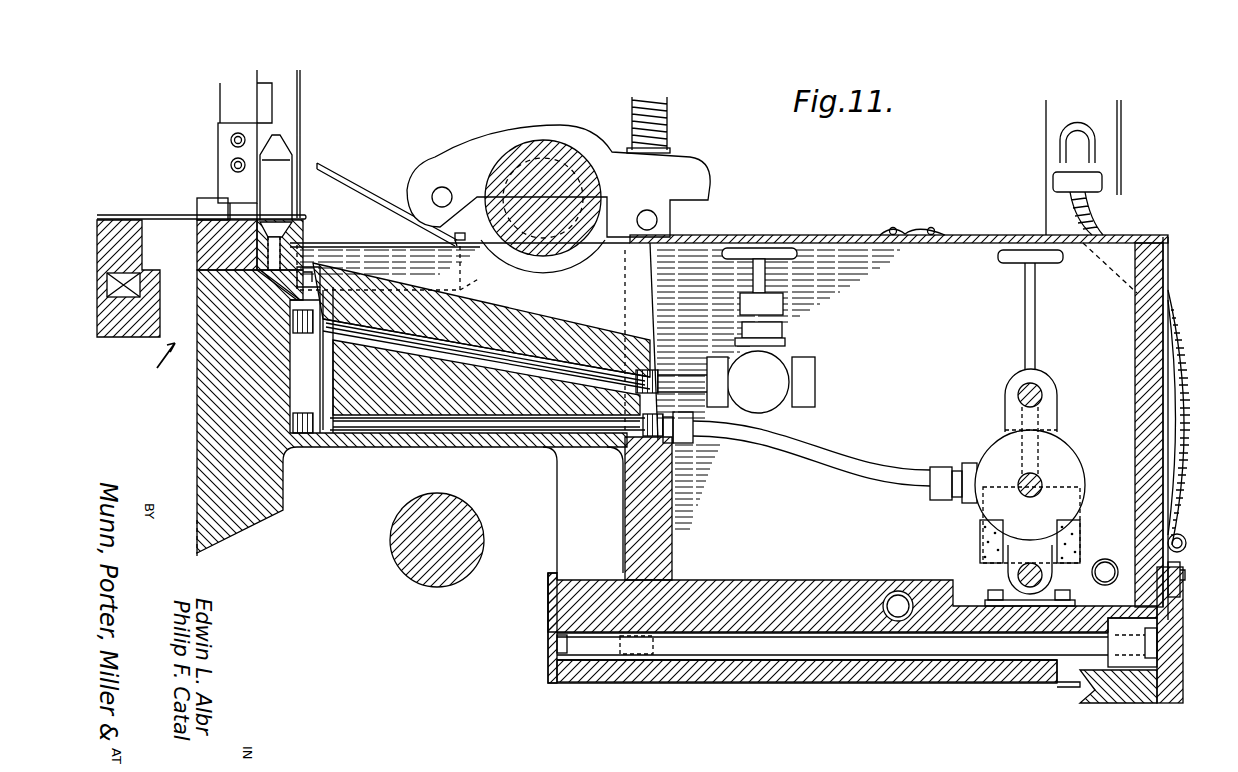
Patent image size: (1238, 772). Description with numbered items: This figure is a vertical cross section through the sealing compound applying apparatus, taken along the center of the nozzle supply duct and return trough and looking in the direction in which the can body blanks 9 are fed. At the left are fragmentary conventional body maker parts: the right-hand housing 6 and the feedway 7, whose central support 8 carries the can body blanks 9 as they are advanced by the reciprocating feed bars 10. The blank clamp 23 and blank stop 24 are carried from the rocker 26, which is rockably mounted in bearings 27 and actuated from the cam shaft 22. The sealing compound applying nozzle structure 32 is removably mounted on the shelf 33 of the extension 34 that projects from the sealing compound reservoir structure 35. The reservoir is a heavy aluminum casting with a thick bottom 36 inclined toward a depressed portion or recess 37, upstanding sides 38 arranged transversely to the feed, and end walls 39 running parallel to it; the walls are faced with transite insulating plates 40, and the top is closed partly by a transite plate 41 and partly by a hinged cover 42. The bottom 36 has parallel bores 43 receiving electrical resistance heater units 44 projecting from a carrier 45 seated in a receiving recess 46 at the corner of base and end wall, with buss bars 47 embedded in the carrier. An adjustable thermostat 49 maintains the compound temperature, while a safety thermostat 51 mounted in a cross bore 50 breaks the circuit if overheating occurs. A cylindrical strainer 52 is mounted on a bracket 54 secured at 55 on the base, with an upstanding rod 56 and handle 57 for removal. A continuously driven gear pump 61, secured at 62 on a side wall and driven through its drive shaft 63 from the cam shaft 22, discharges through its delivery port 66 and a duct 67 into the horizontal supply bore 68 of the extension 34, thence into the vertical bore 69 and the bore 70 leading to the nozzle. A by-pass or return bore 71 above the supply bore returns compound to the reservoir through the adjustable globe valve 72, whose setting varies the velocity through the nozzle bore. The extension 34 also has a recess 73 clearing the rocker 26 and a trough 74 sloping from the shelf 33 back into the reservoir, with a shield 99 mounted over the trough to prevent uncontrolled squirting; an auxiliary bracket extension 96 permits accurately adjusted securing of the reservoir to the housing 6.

The right-hand housing 6 is at (210, 412).
The feedway 7 is at (155, 356).
The central support 8 is at (113, 223).
The can body blanks 9 is at (156, 218).
The reciprocating feed bars 10 is at (205, 236).
The cam shaft 22 is at (417, 505).
The blank clamp 23 is at (287, 170).
The blank stop 24 is at (237, 192).
The rocker 26 is at (557, 163).
The bearings 27 is at (518, 136).
The sealing compound applying nozzle structure 32 is at (257, 245).
The shelf 33 is at (263, 285).
The extension 34 is at (413, 440).
The sealing compound reservoir structure 35 is at (855, 227).
The bottom 36 is at (773, 620).
The depressed portion or recess 37 is at (973, 607).
The upstanding sides 38 is at (940, 263).
The end walls 39 is at (1153, 300).
The transite insulating plates 40 is at (1168, 340).
The transite plate 41 is at (785, 224).
The hinged cover 42 is at (1035, 234).
The parallel bores 43 is at (875, 660).
The electrical resistance heater units 44 is at (817, 647).
The carrier 45 is at (1133, 673).
The receiving recess 46 is at (1137, 613).
The buss bars 47 is at (1143, 640).
The adjustable thermostat 49 is at (1105, 565).
The cross bore 50 is at (880, 597).
The safety thermostat 51 is at (897, 597).
The cylindrical strainer 52 is at (972, 546).
The bracket 54 is at (986, 594).
The securing point 55 is at (1057, 570).
The upstanding rod 56 is at (1027, 344).
The handle 57 is at (1017, 262).
The gear pump 61 is at (1073, 449).
The pump securing point 62 is at (1018, 398).
The drive shaft 63 is at (1038, 477).
The delivery port 66 is at (973, 470).
The duct 67 is at (890, 478).
The horizontal supply bore 68 is at (513, 431).
The vertical bore 69 is at (323, 372).
The bore 70 is at (300, 250).
The by-pass or return bore 71 is at (541, 357).
The adjustable globe valve 72 is at (736, 336).
The recess 73 is at (590, 258).
The trough 74 is at (497, 320).
The auxiliary bracket extension 96 is at (465, 280).
The shield 99 is at (372, 178).